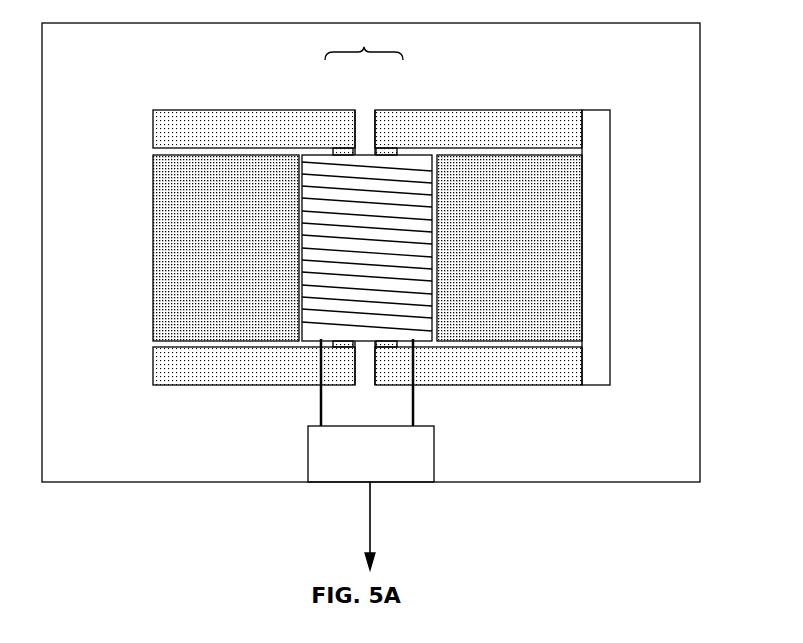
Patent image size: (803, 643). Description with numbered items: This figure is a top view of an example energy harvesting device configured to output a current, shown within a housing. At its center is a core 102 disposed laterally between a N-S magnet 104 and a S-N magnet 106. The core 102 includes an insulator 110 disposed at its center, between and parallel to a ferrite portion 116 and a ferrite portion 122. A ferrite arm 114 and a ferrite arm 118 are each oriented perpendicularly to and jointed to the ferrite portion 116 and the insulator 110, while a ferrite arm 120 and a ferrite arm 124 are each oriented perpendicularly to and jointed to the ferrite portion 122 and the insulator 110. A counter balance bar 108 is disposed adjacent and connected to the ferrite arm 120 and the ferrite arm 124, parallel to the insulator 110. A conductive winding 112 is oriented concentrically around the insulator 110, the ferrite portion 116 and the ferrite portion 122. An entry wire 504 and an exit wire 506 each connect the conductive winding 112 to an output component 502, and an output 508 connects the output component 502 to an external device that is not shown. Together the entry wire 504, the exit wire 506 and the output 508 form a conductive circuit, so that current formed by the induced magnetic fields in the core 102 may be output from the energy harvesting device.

The core 102 is at (364, 45).
The N-S magnet 104 is at (167, 186).
The S-N magnet 106 is at (449, 190).
The counter balance bar 108 is at (602, 246).
The insulator 110 is at (363, 122).
The conductive winding 112 is at (413, 168).
The ferrite arm 114 is at (200, 136).
The ferrite portion 116 is at (343, 148).
The ferrite arm 118 is at (167, 380).
The ferrite arm 120 is at (517, 136).
The ferrite portion 122 is at (387, 150).
The ferrite arm 124 is at (527, 375).
The output component 502 is at (324, 465).
The entry wire 504 is at (321, 403).
The exit wire 506 is at (413, 395).
The output 508 is at (372, 520).